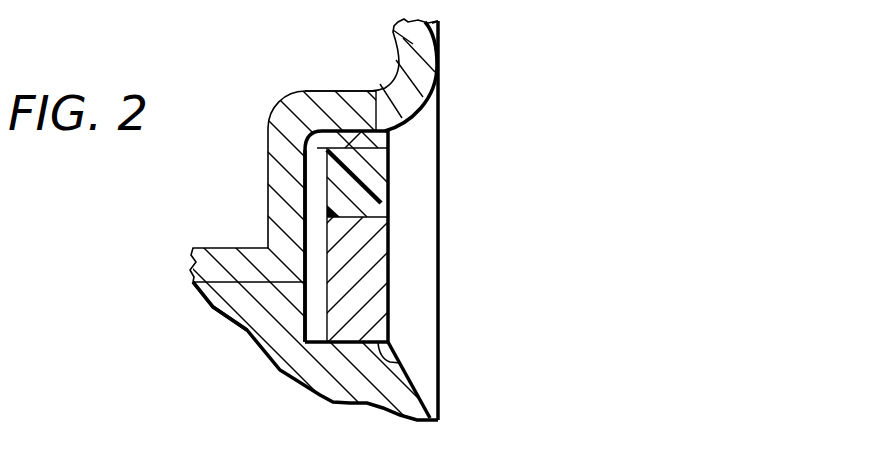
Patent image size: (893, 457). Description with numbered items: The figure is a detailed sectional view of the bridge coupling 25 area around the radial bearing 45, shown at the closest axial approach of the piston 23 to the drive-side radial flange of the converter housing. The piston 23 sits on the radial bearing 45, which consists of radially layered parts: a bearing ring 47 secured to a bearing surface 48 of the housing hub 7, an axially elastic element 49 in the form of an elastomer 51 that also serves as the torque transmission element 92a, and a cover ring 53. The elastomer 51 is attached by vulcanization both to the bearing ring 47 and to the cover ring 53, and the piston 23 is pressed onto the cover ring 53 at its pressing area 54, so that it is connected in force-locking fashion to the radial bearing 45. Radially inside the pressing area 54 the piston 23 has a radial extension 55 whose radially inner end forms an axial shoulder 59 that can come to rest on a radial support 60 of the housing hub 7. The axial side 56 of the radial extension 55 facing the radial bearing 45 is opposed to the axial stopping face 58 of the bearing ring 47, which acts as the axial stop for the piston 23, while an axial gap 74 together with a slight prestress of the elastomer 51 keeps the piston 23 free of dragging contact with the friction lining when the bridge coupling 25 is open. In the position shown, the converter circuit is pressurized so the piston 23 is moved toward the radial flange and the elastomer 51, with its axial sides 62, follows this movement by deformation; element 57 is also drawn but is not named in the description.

The piston 23 is at (427, 42).
The bridge coupling 25 is at (435, 21).
The housing hub 7 is at (345, 393).
The radial bearing 45 is at (403, 233).
The bearing ring 47 is at (377, 293).
The bearing surface 48 is at (400, 363).
The axially elastic element 49 is at (386, 146).
The elastomer 51 is at (390, 200).
The cover ring 53 is at (392, 126).
The pressing area 54 is at (336, 91).
The radial extension 55 is at (285, 153).
The axial side 56 is at (308, 185).
The bottom surface 57 is at (285, 283).
The axial stopping face 58 is at (324, 262).
The axial shoulder 59 is at (202, 273).
The radial support 60 is at (223, 304).
The axial sides 62 is at (304, 124).
The axial gap 74 is at (315, 225).
The torque transmission element 92a is at (340, 124).